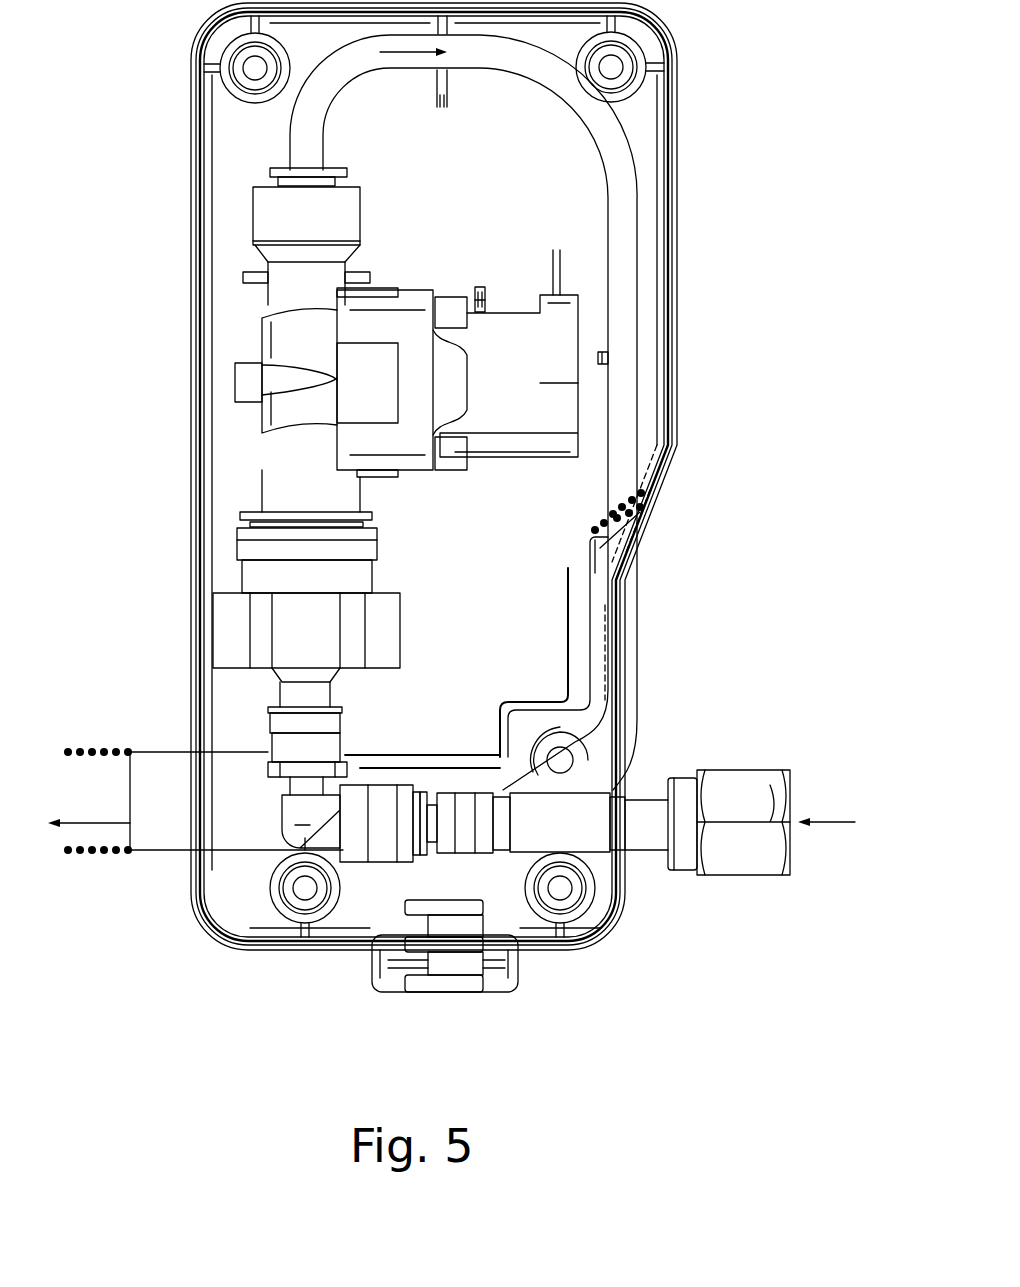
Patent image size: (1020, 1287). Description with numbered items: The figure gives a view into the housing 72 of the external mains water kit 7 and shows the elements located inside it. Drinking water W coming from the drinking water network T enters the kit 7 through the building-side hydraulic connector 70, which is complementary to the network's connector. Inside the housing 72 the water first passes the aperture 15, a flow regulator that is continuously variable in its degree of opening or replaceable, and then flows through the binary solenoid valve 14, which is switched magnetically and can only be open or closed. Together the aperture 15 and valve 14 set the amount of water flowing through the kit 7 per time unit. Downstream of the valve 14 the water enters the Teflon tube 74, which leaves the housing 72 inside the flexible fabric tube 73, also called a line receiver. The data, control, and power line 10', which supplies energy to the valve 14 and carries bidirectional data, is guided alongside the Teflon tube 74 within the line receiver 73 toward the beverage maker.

The mains water kit 7 is at (766, 922).
The data, control, and power line 10' is at (541, 412).
The binary solenoid valve 14 is at (472, 278).
The aperture 15 is at (410, 546).
The hydraulic connector 70 is at (700, 767).
The housing 72 is at (668, 62).
The flexible fabric tube 73 is at (172, 825).
The Teflon tube 74 is at (652, 270).